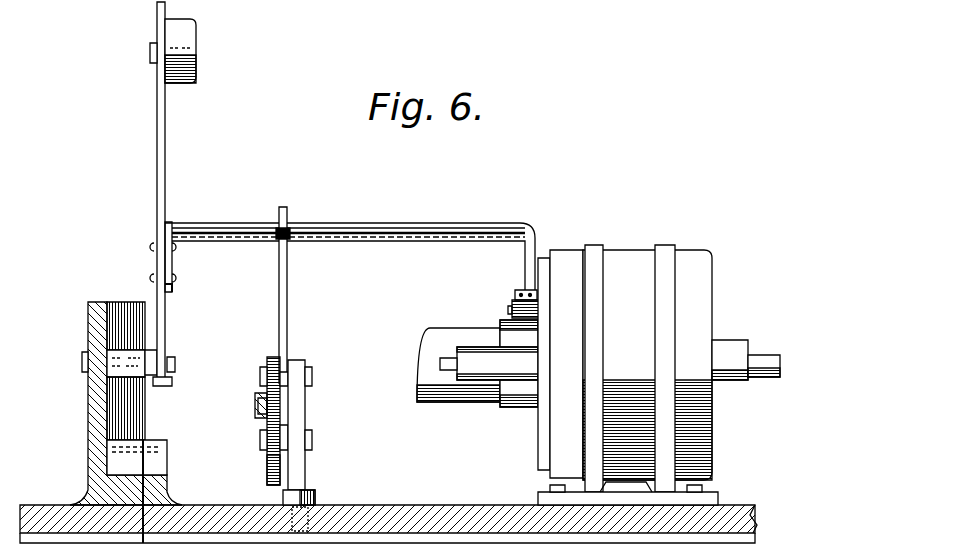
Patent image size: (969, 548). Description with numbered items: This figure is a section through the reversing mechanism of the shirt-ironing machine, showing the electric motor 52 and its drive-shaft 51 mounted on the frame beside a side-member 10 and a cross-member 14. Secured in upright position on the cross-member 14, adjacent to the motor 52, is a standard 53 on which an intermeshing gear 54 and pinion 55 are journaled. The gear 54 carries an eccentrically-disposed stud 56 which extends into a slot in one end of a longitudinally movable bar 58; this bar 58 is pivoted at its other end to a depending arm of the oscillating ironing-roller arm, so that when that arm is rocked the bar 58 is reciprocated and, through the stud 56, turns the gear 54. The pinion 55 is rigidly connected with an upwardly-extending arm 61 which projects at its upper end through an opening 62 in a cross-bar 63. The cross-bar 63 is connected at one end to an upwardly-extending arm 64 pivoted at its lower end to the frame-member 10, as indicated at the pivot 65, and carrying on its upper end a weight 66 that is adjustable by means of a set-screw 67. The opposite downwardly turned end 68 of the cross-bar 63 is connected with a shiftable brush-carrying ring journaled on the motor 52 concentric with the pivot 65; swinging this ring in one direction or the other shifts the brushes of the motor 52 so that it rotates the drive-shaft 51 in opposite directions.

The side-member 10 is at (88, 410).
The cross-member 14 is at (380, 508).
The drive-shaft 51 is at (765, 355).
The motor 52 is at (567, 375).
The standard 53 is at (301, 418).
The gear 54 is at (268, 470).
The pinion 55 is at (272, 352).
The eccentrically-disposed stud 56 is at (255, 400).
The longitudinally movable bar 58 is at (258, 410).
The upwardly-extending arm 61 is at (288, 305).
The opening 62 is at (291, 232).
The cross-bar 63 is at (383, 237).
The upwardly-extending arm 64 is at (156, 192).
The pivot 65 is at (171, 356).
The weight 66 is at (197, 63).
The set-screw 67 is at (150, 55).
The downwardly turned end 68 is at (527, 265).